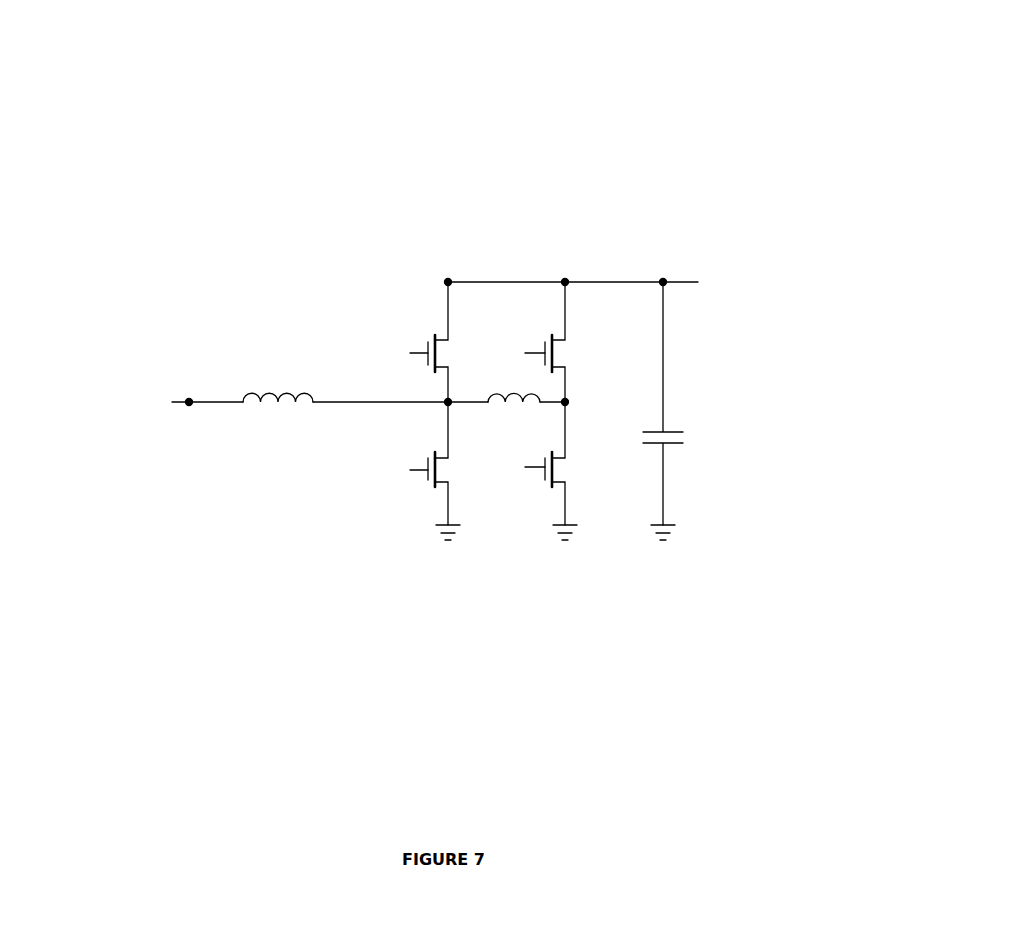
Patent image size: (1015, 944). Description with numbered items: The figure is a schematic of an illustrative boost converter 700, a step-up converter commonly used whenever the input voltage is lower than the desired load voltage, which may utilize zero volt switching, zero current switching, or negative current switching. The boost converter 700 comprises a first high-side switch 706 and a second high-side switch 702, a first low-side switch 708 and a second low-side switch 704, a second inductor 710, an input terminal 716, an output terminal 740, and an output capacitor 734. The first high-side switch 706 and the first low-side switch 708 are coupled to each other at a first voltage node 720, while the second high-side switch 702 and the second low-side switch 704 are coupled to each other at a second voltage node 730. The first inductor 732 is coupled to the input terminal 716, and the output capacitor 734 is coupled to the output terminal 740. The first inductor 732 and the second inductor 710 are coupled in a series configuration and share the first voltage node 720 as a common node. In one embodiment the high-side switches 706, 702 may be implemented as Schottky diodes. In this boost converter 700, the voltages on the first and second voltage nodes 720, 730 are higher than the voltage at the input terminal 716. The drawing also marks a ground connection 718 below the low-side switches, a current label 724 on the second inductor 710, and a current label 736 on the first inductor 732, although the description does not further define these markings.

The boost converter 700 is at (888, 110).
The high-side switch DHB 702 is at (566, 350).
The low-side switch DLB 704 is at (565, 467).
The high-side switch DHA 706 is at (418, 342).
The low-side switch DLA 708 is at (418, 460).
The inductor L2 710 is at (503, 398).
The input terminal 716 is at (185, 411).
The ground node 718 is at (441, 522).
The voltage node LXA 720 is at (447, 399).
The inductor current IL2 724 is at (473, 385).
The voltage node LXB 730 is at (570, 392).
The inductor L1 732 is at (285, 413).
The output capacitor COUT 734 is at (672, 426).
The inductor current IL1 736 is at (212, 384).
The output terminal 740 is at (667, 274).